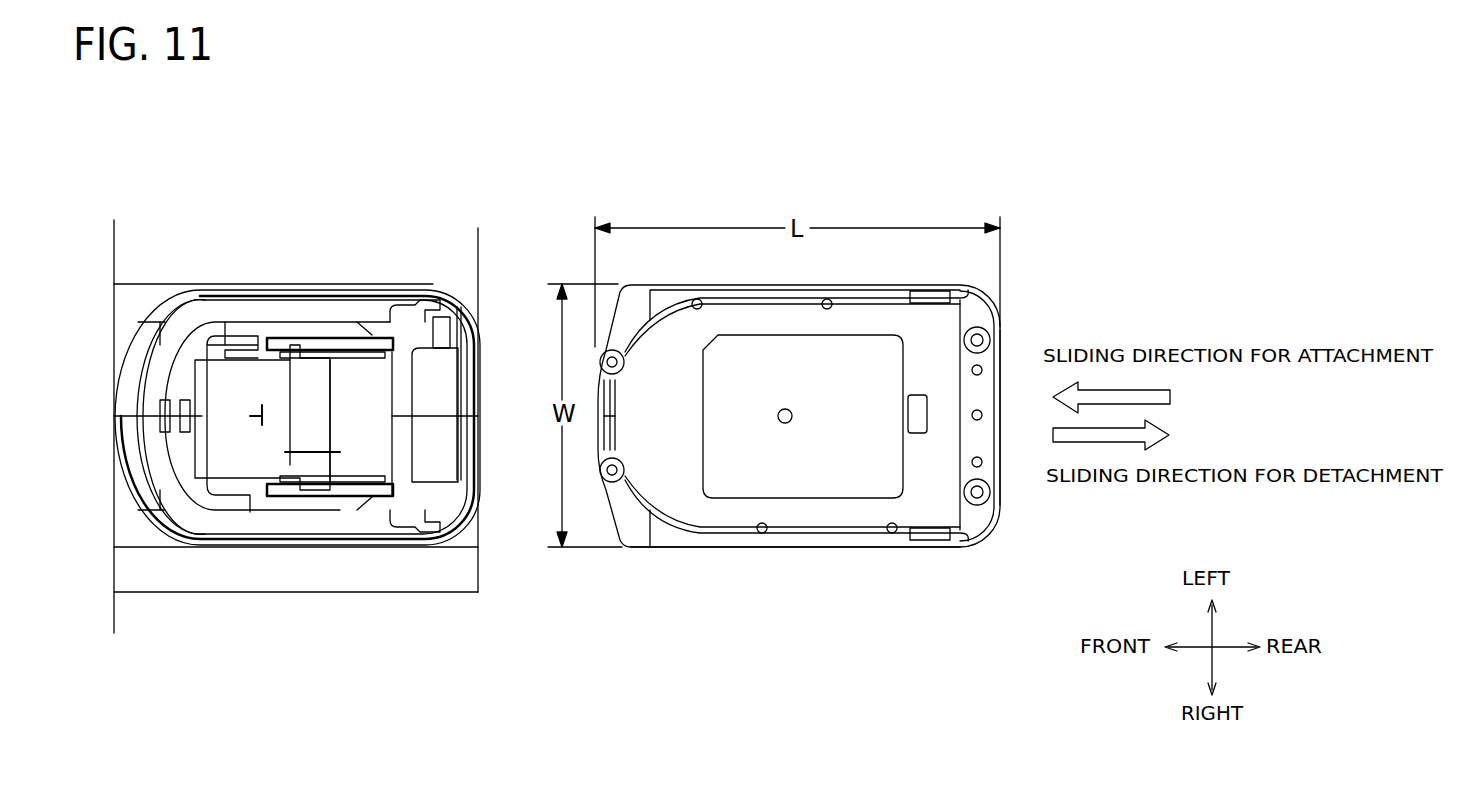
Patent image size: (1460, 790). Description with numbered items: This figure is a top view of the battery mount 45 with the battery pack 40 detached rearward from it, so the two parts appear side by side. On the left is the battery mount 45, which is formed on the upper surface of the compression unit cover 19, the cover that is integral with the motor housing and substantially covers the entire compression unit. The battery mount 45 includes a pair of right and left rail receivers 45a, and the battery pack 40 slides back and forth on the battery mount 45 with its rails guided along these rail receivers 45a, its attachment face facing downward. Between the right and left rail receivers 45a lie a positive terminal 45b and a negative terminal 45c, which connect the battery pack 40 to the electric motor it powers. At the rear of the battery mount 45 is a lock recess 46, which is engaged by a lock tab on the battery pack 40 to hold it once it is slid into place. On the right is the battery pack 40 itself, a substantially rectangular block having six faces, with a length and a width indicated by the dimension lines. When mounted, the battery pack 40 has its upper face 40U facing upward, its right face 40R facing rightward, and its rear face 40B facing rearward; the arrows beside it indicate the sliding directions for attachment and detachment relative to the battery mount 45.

The compression unit cover 19 is at (480, 556).
The battery mount 45 is at (213, 262).
The rail receivers 45a is at (367, 330).
The positive terminal 45b is at (360, 490).
The negative terminal 45c is at (333, 338).
The lock recess 46 is at (413, 380).
The battery pack 40 is at (692, 560).
The upper face 40U is at (842, 472).
The right face 40R is at (742, 548).
The rear face 40B is at (1005, 438).